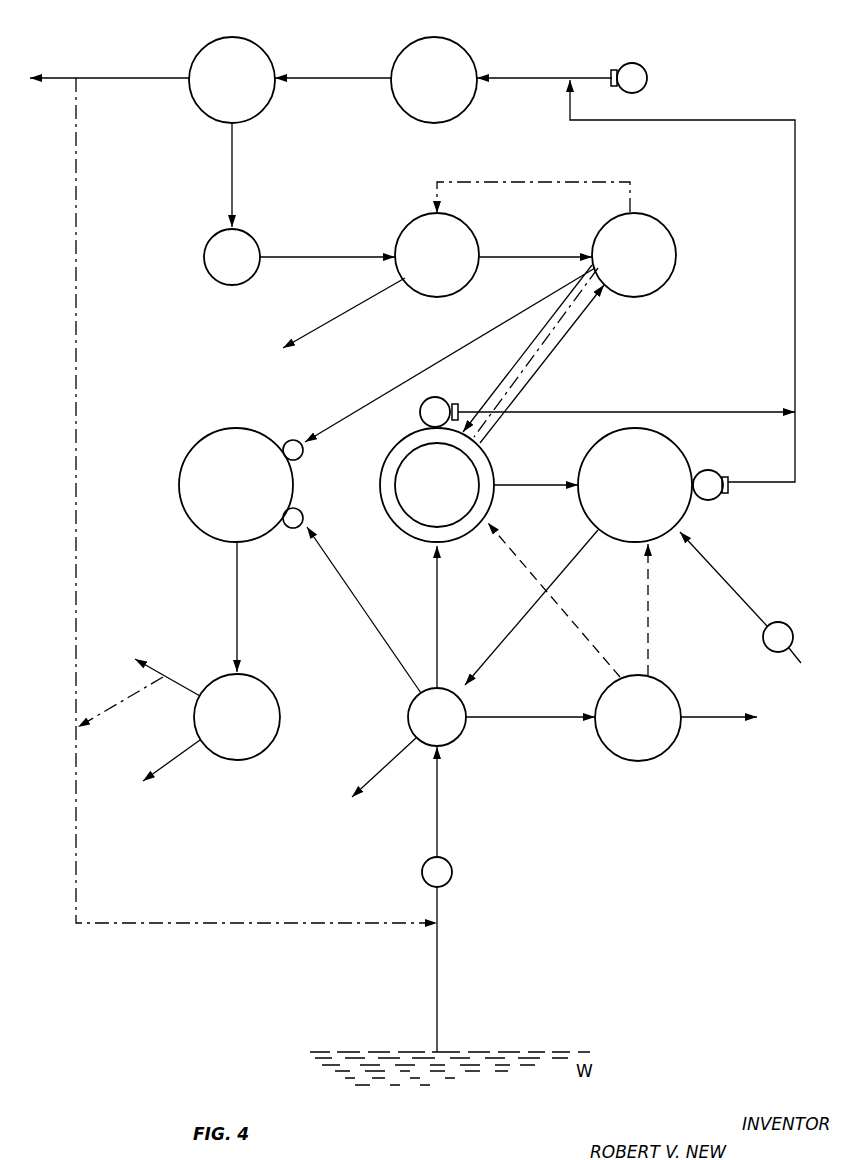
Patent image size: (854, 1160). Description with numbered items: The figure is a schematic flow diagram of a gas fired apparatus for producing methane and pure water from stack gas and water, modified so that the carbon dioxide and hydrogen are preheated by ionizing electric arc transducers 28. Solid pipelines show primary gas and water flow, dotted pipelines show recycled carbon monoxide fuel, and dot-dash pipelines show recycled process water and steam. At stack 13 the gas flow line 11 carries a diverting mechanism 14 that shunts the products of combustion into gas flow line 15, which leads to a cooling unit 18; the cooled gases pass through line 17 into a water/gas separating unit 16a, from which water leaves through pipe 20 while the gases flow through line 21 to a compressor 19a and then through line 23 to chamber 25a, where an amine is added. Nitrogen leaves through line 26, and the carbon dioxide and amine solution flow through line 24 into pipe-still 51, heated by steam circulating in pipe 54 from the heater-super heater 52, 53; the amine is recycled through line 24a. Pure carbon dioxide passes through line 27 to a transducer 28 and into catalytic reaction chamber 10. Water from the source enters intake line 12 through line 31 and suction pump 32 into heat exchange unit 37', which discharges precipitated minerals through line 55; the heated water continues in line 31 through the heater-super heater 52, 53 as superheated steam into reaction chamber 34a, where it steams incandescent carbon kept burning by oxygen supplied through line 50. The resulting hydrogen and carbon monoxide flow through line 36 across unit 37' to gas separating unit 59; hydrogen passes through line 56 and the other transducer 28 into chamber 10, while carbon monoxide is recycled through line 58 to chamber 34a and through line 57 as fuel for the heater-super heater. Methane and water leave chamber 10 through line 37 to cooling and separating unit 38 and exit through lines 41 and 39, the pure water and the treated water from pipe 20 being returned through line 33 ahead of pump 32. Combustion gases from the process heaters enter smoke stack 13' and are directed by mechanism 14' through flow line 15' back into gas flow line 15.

The catalytic reaction chamber 10 is at (183, 465).
The gas flow line 11 is at (470, 42).
The water intake line 12 is at (455, 866).
The stack 13 is at (649, 67).
The diverting mechanism 14 is at (599, 64).
The gas flow line 15 is at (544, 93).
The flow line 15' is at (626, 395).
The water/gas separating unit 16a is at (229, 38).
The line 17 is at (344, 78).
The cooling unit 18 is at (415, 40).
The compressor 19a is at (204, 255).
The pipe 20 is at (147, 78).
The line 21 is at (232, 173).
The line 23 is at (342, 257).
The line 24 is at (553, 257).
The line 24a is at (567, 182).
The chamber 25a is at (422, 217).
The line 26 is at (335, 311).
The line 27 is at (430, 367).
The ionizing electric arc transducers 28 is at (290, 440).
The line 31 is at (516, 486).
The suction pump 32 is at (421, 863).
The line 33 is at (76, 322).
The reaction chamber 34a is at (680, 446).
The line 36 is at (526, 612).
The line 37 is at (253, 607).
The heat exchange unit 37' is at (453, 720).
The cooling and separating unit 38 is at (262, 752).
The line 39 is at (178, 683).
The line 41 is at (164, 773).
The line 50 is at (735, 588).
The pipe-still 51 is at (671, 237).
The heater section 52 is at (394, 492).
The super heater 53 is at (392, 522).
The pipe 54 is at (541, 335).
The line 55 is at (394, 750).
The line 56 is at (401, 590).
The line 57 is at (573, 612).
The line 58 is at (652, 612).
The gas separating unit 59 is at (672, 750).
The smoke stack 13' is at (435, 396).
The mechanism 14' is at (469, 392).